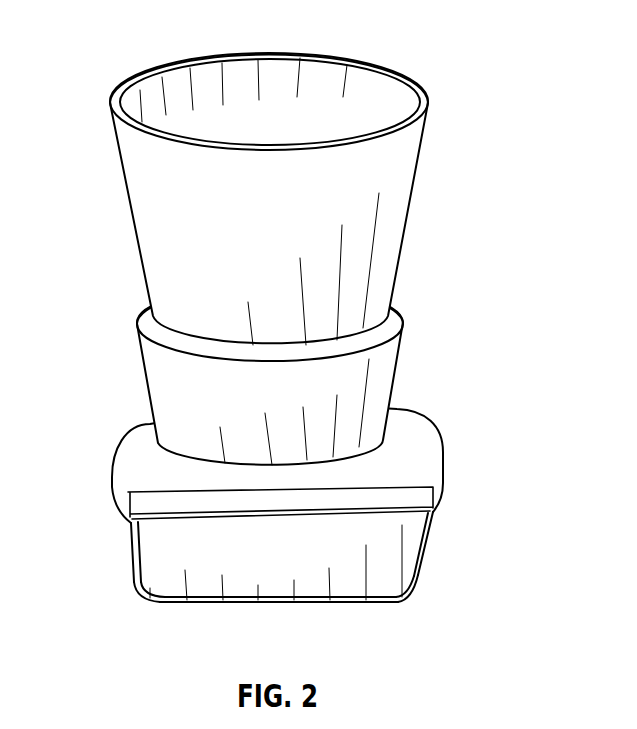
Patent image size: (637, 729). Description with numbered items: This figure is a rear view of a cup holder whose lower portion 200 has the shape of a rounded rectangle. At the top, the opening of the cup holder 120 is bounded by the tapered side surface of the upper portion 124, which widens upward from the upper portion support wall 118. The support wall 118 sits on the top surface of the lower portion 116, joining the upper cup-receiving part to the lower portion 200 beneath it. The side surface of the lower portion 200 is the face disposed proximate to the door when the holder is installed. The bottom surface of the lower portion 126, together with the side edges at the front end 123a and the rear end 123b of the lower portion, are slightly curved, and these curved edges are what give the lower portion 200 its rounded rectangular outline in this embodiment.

The top surface of lower portion 116 is at (118, 458).
The upper portion support wall 118 is at (145, 381).
The opening of the cup holder 120 is at (285, 78).
The front end of lower portion 123a is at (134, 584).
The rear end of lower portion 123b is at (416, 584).
The side surface of upper portion 124 is at (132, 212).
The bottom surface of lower portion 126 is at (301, 603).
The lower portion 200 is at (408, 558).